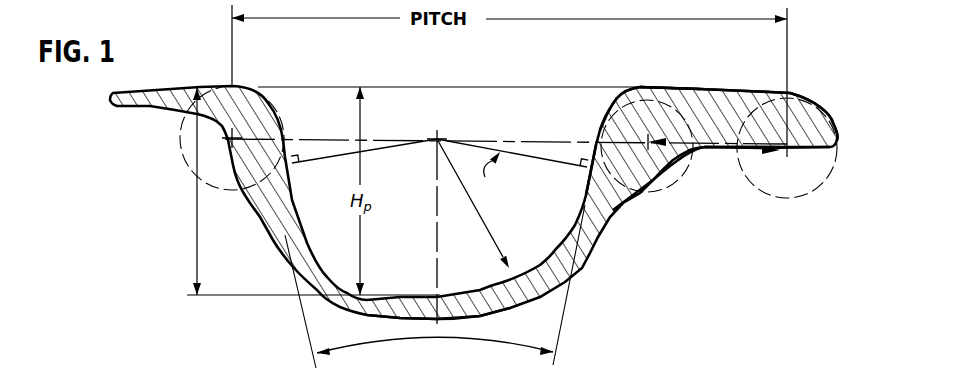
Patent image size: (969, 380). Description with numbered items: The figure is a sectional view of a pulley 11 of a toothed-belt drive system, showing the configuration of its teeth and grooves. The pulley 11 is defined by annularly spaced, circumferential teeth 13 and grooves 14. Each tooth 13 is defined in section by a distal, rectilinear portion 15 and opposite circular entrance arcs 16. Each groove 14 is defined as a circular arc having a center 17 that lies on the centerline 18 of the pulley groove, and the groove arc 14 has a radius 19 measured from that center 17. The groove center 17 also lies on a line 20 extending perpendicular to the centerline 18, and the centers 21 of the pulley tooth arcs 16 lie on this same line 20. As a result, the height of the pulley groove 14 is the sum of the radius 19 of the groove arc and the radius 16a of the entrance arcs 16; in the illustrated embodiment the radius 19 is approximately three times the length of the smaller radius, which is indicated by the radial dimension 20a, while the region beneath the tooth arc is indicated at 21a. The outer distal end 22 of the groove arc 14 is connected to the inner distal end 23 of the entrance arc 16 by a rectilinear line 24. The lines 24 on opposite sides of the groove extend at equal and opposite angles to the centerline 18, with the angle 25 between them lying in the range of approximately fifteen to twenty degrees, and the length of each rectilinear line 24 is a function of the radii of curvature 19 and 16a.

The pulley 11 is at (806, 81).
The tooth 13 is at (714, 180).
The groove 14 is at (574, 274).
The distal rectilinear portion 15 is at (703, 89).
The circular entrance arc 16 is at (622, 107).
The radius of the arcs 16a is at (664, 88).
The center 17 is at (505, 122).
The centerline 18 is at (440, 240).
The radius 19 is at (518, 153).
The line 20 is at (513, 139).
The pitch radius 20a is at (490, 174).
The centers of the pulley tooth arcs 21 is at (623, 203).
The underside surface 21a is at (697, 146).
The outer distal end 22 is at (590, 178).
The inner distal end 23 is at (603, 131).
The rectilinear line 24 is at (288, 148).
The angle 25 is at (462, 339).